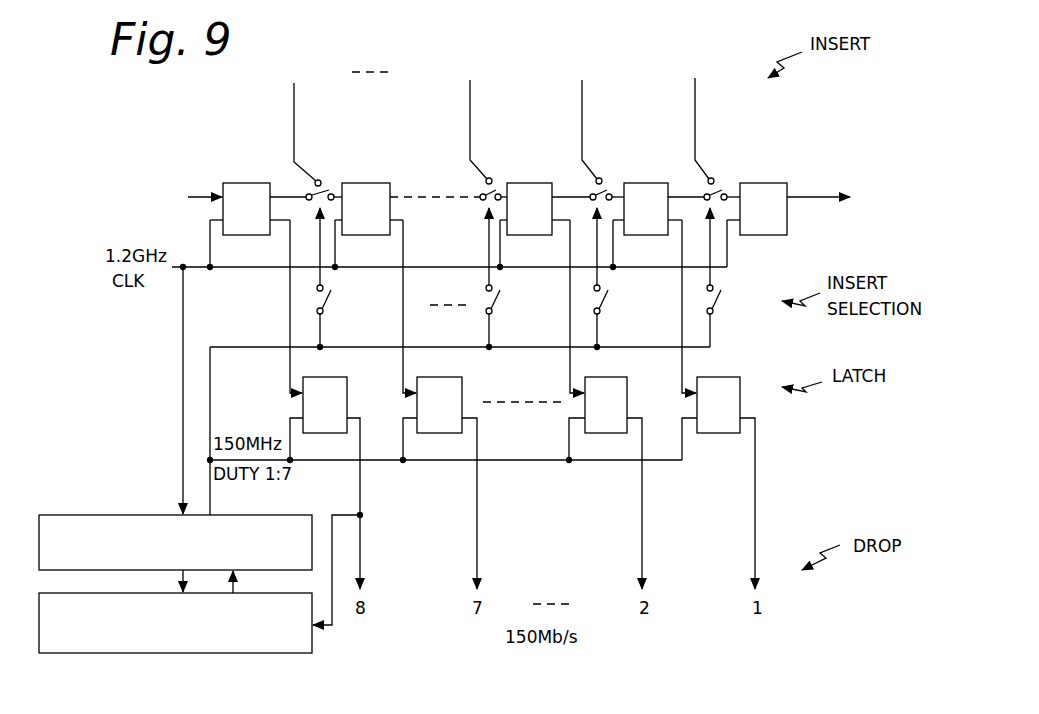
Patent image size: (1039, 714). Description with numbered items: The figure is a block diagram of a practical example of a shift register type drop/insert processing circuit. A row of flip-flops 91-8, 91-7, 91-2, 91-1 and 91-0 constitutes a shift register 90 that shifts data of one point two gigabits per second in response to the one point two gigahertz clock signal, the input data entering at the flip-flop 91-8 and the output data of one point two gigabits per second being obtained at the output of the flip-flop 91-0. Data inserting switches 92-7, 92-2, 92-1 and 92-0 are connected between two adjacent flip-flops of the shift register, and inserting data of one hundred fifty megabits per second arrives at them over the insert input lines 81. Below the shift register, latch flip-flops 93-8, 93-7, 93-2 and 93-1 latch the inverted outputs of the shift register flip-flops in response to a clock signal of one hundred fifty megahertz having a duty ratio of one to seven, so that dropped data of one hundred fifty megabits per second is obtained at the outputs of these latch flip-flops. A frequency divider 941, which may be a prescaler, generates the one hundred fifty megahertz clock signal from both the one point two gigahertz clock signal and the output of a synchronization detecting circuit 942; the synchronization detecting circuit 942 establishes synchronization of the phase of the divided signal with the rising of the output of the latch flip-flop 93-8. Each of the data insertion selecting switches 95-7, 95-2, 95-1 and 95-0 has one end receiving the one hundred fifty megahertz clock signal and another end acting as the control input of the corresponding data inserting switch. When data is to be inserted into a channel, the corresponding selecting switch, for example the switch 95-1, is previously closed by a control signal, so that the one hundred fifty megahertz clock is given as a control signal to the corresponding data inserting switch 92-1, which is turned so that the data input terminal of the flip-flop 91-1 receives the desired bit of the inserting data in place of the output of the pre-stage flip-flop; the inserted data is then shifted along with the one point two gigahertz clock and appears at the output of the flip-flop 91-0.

The insert input lines (150 Mb/s) 81 is at (531, 24).
The shift register 90 is at (540, 177).
The flip-flop 91-8 is at (246, 183).
The flip-flop 91-7 is at (368, 183).
The flip-flop 91-2 is at (532, 183).
The flip-flop 91-1 is at (632, 183).
The flip-flop 91-0 is at (763, 183).
The data inserting switch 92-7 is at (320, 180).
The data inserting switch 92-2 is at (482, 178).
The data inserting switch 92-1 is at (596, 178).
The data inserting switch 92-0 is at (718, 180).
The flip-flop 93-8 is at (322, 377).
The flip-flop 93-7 is at (440, 377).
The flip-flop 93-2 is at (605, 377).
The flip-flop 93-1 is at (716, 377).
The data insertion selecting switch 95-7 is at (328, 290).
The data insertion selecting switch 95-2 is at (499, 288).
The data insertion control switch 95-1 is at (611, 288).
The data insertion selecting switch 95-0 is at (720, 288).
The frequency divider 941 is at (125, 515).
The synchronization detecting circuit 942 is at (112, 596).